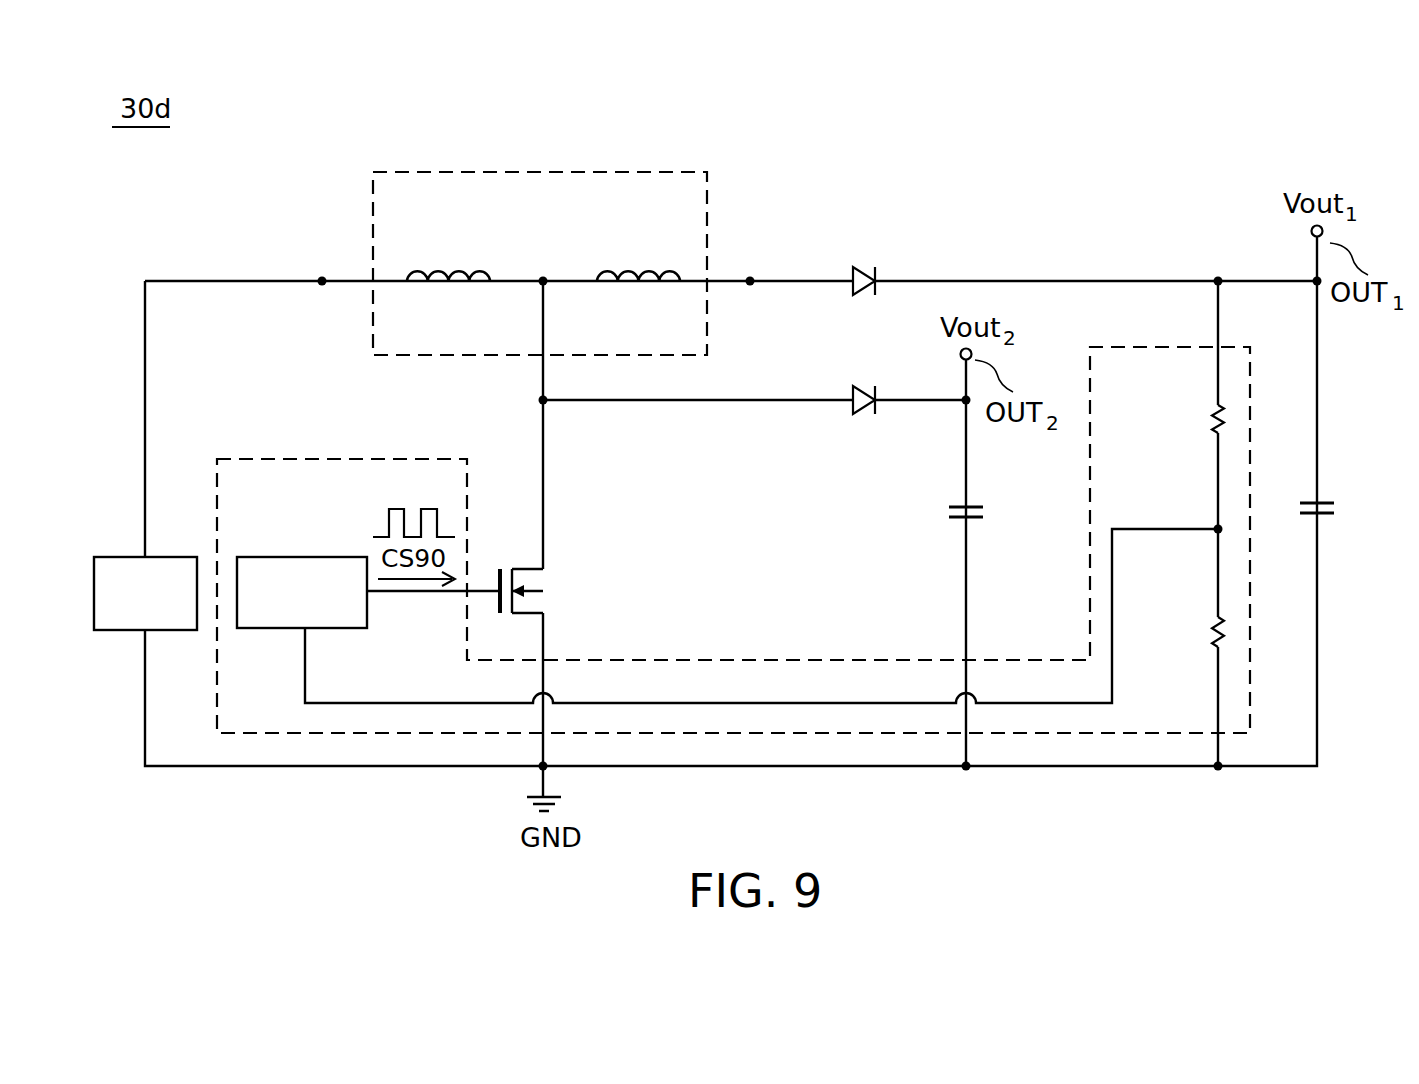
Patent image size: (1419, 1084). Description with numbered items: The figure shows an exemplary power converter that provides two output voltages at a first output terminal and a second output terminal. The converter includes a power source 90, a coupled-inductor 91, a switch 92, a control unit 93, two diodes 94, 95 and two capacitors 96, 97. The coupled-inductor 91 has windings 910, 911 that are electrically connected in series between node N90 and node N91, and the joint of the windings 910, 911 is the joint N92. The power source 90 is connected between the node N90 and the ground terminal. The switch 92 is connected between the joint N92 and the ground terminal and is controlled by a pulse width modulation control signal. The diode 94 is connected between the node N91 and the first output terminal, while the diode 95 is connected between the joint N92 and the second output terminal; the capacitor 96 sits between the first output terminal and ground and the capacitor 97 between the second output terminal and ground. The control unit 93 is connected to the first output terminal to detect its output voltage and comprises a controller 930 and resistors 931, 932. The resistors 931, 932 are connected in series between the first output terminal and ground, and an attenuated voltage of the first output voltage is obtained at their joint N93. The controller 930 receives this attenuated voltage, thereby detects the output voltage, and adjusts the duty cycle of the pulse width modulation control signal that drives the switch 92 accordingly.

The power source 90 is at (177, 556).
The coupled-inductor 91 is at (541, 170).
The winding 910 is at (452, 270).
The winding 911 is at (640, 270).
The switch 92 is at (527, 556).
The control unit 93 is at (302, 458).
The controller 930 is at (302, 554).
The resistor 931 is at (1210, 416).
The resistor 932 is at (1210, 629).
The diode 94 is at (866, 265).
The diode 95 is at (866, 385).
The capacitor 96 is at (1342, 508).
The capacitor 97 is at (945, 507).
The node N90 is at (322, 281).
The node N91 is at (750, 281).
The joint N92 is at (543, 281).
The joint N93 is at (1216, 527).